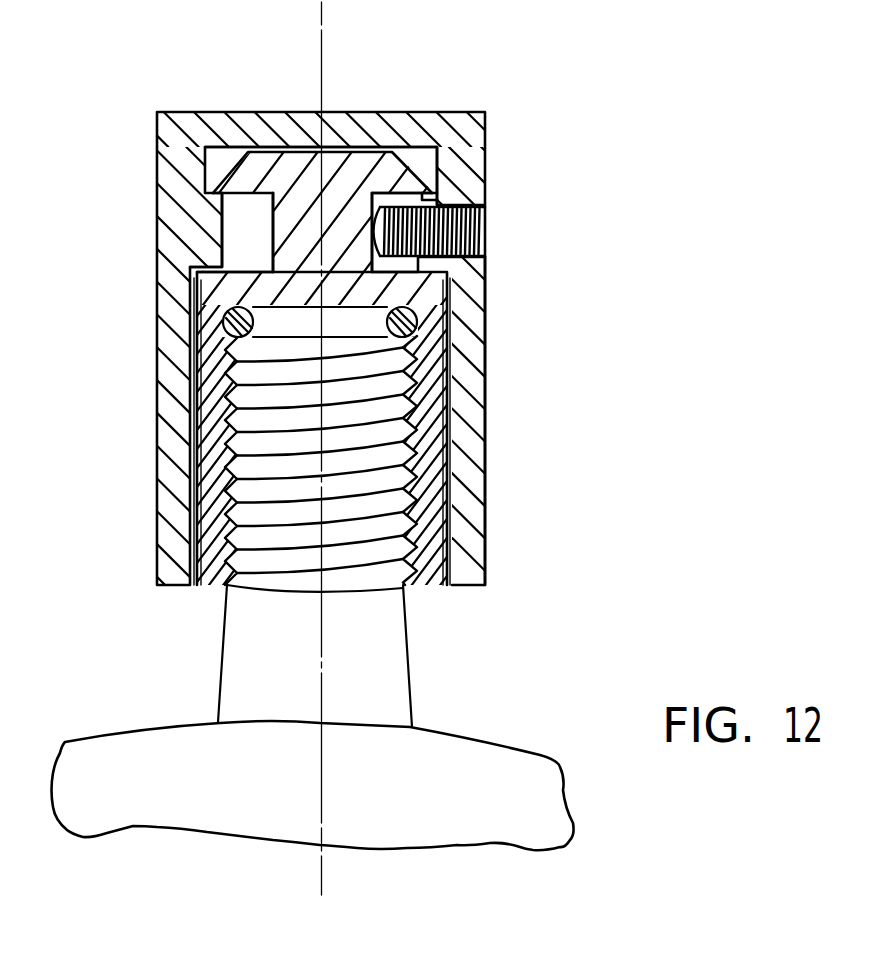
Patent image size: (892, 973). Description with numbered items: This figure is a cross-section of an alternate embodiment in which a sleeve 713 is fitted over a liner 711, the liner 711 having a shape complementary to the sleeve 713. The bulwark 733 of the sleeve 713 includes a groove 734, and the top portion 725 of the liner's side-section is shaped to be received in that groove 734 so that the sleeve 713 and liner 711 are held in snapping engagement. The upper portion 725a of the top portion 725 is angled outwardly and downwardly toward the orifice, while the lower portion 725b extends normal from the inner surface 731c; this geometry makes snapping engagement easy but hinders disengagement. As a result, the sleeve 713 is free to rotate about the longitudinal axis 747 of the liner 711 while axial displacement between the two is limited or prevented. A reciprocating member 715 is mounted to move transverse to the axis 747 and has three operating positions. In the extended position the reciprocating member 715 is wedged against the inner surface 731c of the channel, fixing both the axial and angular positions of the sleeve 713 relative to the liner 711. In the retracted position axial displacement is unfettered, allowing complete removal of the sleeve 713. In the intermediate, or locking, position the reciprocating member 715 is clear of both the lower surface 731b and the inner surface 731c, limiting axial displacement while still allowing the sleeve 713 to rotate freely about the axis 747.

The longitudinal axis 747 is at (322, 9).
The sleeve 713 is at (486, 113).
The liner 711 is at (485, 278).
The groove 734 is at (435, 158).
The bulwark 733 is at (267, 240).
The top portion 725 is at (313, 458).
The upper portion 725a is at (222, 176).
The lower portion 725b is at (227, 212).
The lower surface 731b is at (196, 276).
The inner surface 731c is at (258, 272).
The reciprocating member 715 is at (428, 231).